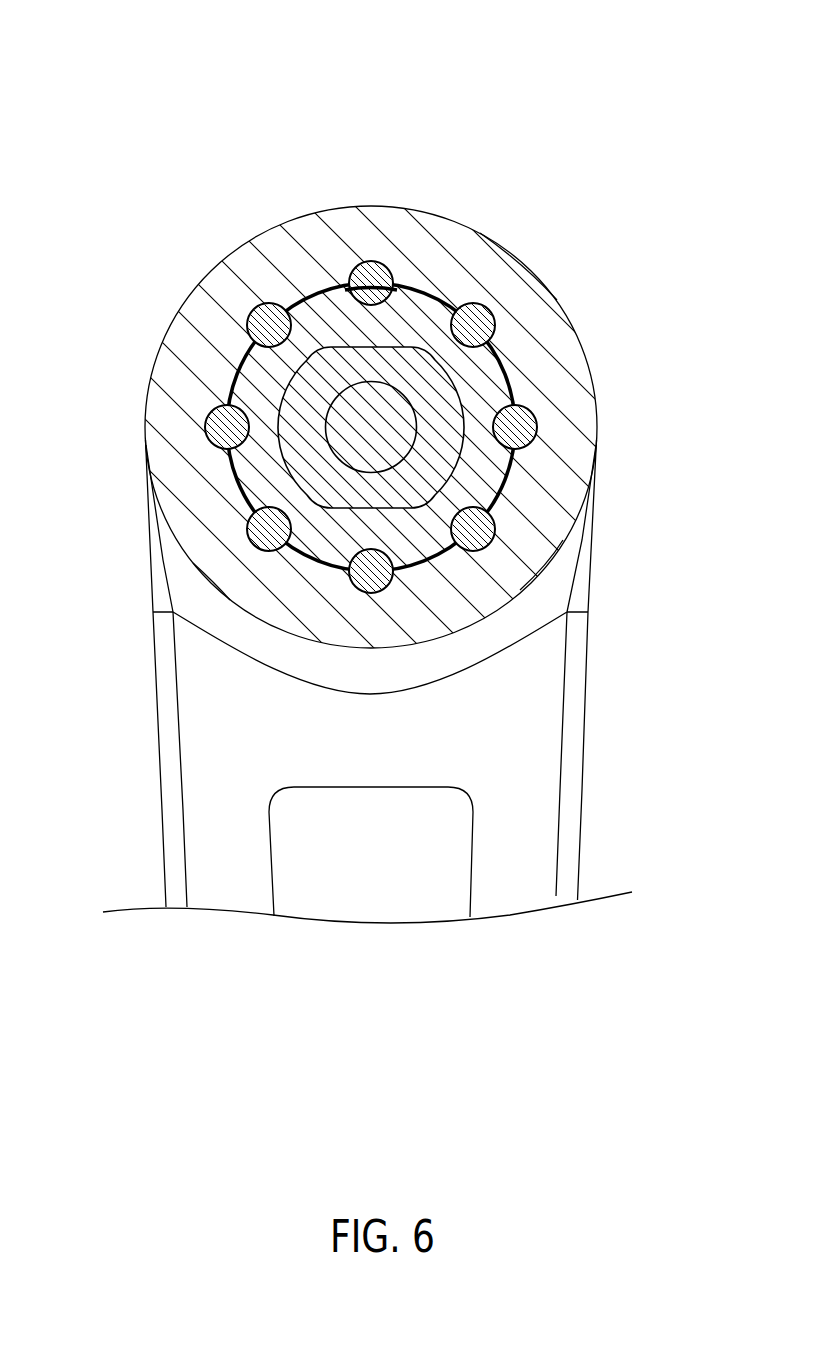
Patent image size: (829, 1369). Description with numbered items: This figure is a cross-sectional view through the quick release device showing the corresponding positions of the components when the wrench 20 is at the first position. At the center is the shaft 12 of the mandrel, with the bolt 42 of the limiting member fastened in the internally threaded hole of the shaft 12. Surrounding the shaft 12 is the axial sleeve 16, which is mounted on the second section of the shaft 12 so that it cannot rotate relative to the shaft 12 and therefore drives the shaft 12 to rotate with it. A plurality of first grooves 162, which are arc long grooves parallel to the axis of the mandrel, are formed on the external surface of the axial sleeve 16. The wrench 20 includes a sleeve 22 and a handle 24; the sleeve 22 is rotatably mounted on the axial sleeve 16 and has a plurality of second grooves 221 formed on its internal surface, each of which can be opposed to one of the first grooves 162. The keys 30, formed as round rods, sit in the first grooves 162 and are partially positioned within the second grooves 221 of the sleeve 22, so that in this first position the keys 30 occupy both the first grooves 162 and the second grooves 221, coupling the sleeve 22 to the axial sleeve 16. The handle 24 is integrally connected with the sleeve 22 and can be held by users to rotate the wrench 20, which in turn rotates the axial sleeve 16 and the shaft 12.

The shaft 12 is at (432, 453).
The axial sleeve 16 is at (490, 380).
The first grooves 162 is at (401, 286).
The wrench 20 is at (414, 536).
The sleeve 22 is at (518, 543).
The second grooves 221 is at (373, 262).
The handle 24 is at (410, 767).
The keys 30 is at (350, 273).
The bolt 42 is at (370, 428).